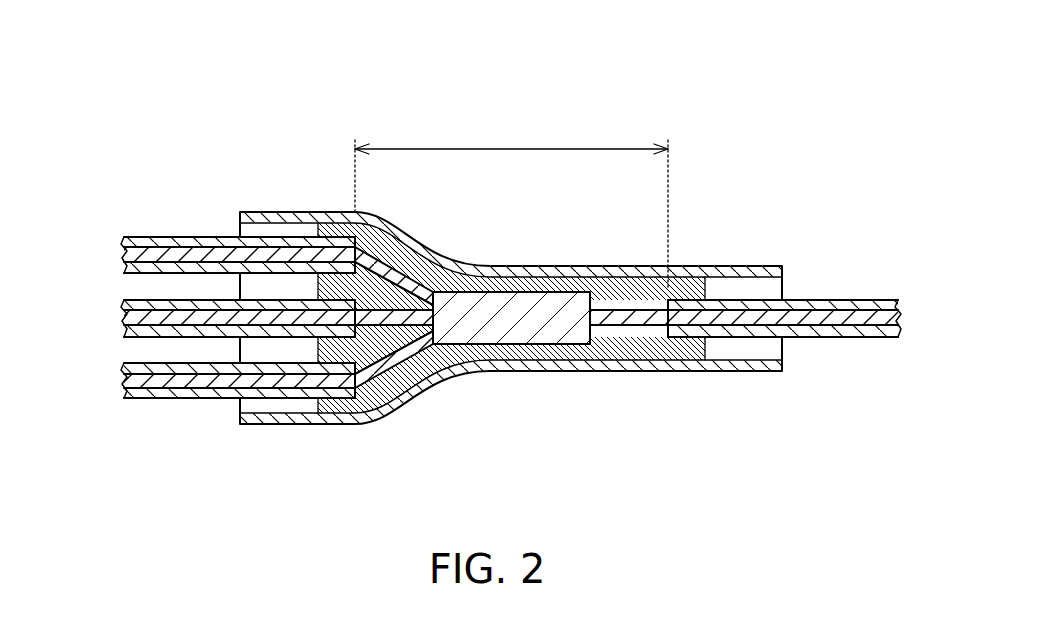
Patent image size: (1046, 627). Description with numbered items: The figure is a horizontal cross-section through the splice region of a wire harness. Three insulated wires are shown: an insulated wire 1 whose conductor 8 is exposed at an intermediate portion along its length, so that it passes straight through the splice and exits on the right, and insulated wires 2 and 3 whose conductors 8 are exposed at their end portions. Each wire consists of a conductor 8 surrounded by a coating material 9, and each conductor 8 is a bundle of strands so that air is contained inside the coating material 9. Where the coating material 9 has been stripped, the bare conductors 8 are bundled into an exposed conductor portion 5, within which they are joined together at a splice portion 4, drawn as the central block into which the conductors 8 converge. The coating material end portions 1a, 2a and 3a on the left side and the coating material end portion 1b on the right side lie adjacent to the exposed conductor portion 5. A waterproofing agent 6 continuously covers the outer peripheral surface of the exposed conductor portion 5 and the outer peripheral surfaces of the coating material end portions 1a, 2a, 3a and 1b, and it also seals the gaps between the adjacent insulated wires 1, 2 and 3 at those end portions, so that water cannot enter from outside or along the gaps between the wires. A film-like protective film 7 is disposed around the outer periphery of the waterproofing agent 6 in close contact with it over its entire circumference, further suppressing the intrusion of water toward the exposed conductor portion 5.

The insulated wire 1 is at (152, 237).
The coating material end portion 1a is at (338, 236).
The coating material end portion 1b is at (688, 339).
The insulated wire 2 is at (142, 337).
The coating material end portion 2a is at (337, 335).
The insulated wire 3 is at (140, 399).
The coating material end portion 3a is at (351, 411).
The splice portion 4 is at (515, 328).
The exposed conductor portion 5 is at (512, 148).
The waterproofing agent 6 is at (614, 346).
The protective film 7 is at (737, 369).
The conductor 8 is at (191, 252).
The coating material 9 is at (222, 236).